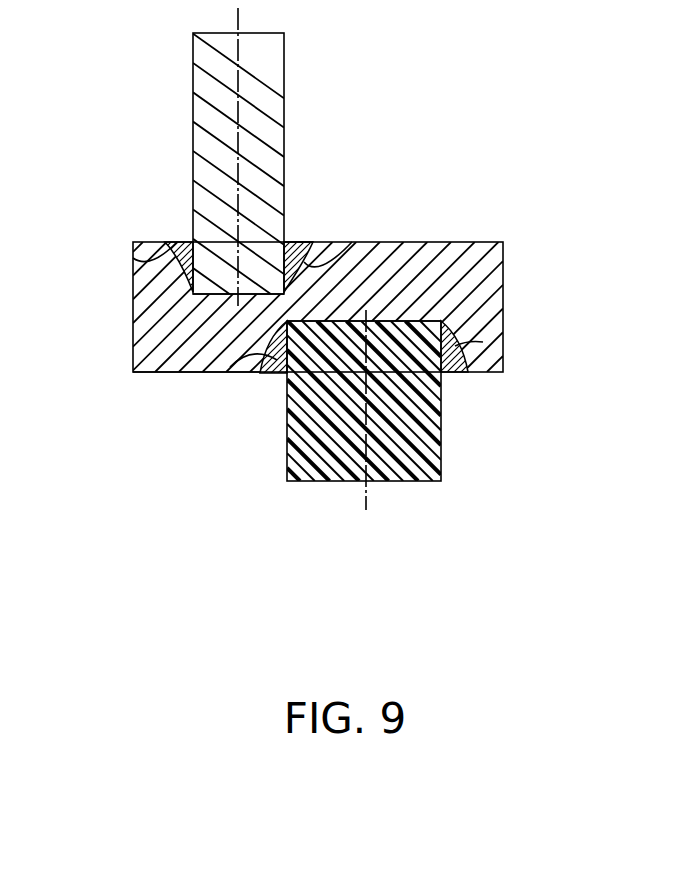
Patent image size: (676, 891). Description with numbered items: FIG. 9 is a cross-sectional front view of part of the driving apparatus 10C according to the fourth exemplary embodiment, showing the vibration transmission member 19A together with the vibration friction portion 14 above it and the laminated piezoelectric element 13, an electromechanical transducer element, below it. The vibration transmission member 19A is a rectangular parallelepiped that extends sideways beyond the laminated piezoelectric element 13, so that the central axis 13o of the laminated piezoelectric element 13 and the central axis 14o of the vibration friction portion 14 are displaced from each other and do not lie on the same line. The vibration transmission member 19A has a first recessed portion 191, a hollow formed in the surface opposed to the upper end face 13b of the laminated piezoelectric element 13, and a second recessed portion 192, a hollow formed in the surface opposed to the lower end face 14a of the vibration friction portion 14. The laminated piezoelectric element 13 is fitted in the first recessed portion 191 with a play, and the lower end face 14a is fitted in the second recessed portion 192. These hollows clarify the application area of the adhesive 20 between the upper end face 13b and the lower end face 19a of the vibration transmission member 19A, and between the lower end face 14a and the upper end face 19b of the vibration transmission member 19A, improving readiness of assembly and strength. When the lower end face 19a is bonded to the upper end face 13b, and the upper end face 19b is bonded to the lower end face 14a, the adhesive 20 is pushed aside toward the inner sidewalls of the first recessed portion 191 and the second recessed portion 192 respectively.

The driving apparatus 10C is at (528, 104).
The laminated piezoelectric element 13 is at (442, 458).
The upper end face of the laminated piezoelectric element 13b is at (377, 322).
The central axis of the laminated piezoelectric element 13o is at (364, 456).
The vibration friction portion 14 is at (284, 73).
The lower end face of the vibration friction portion 14a is at (250, 293).
The central axis of the vibration friction portion 14o is at (240, 112).
The vibration transmission member 19A is at (503, 268).
The lower end face of the vibration transmission member 19a is at (411, 320).
The upper end face of the vibration transmission member 19b is at (197, 297).
The first recessed portion 191 is at (230, 367).
The second recessed portion 192 is at (133, 257).
The adhesive 20 is at (176, 242).